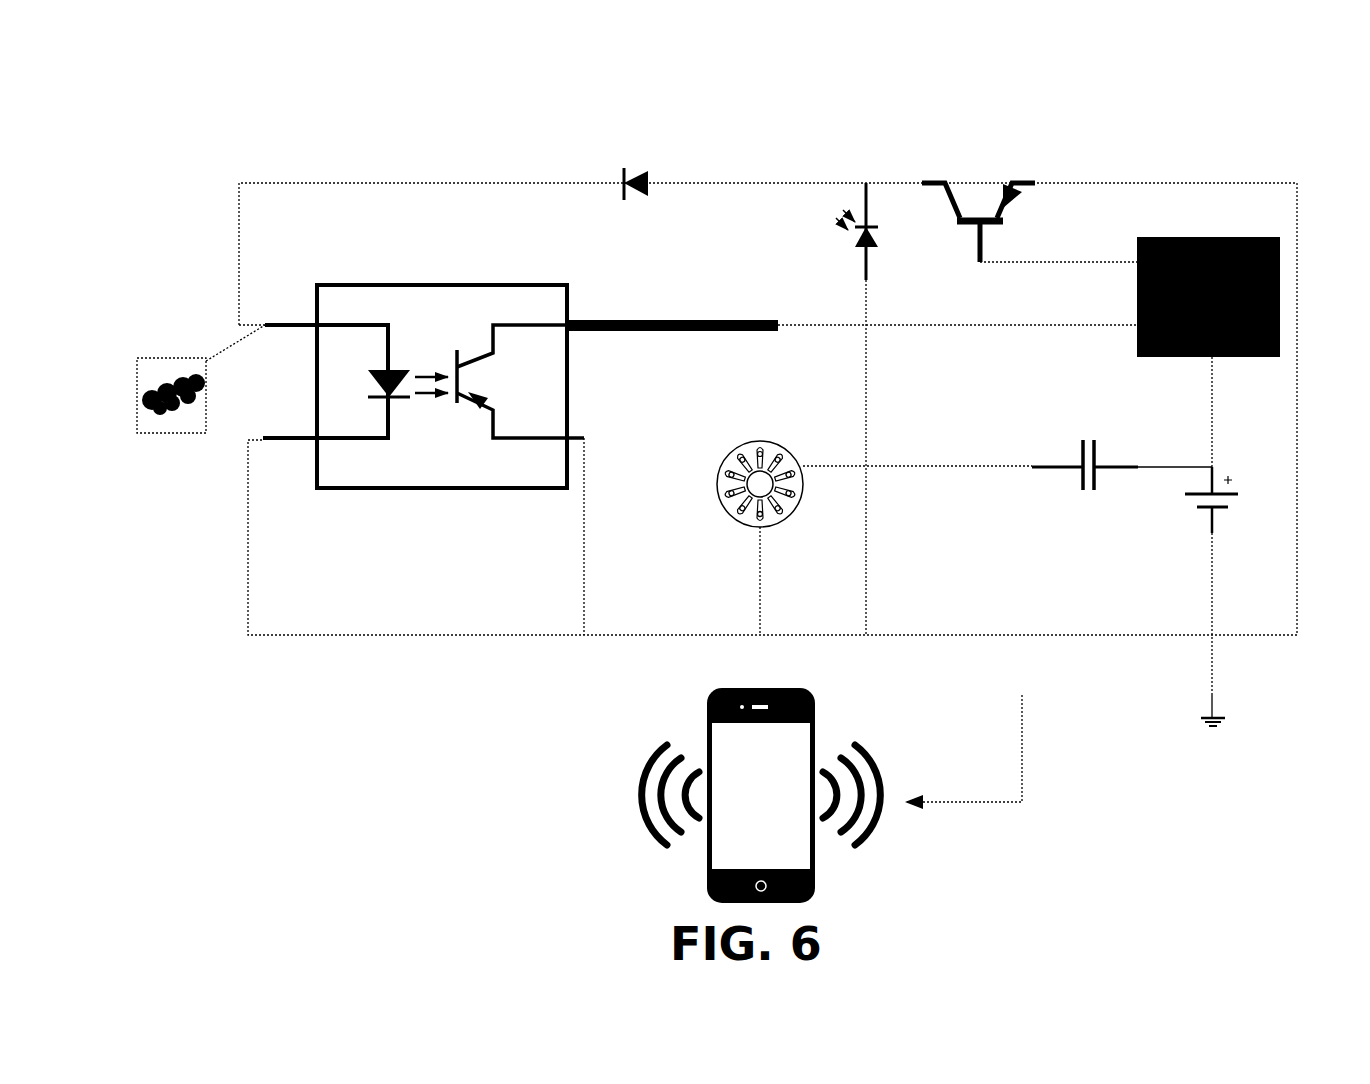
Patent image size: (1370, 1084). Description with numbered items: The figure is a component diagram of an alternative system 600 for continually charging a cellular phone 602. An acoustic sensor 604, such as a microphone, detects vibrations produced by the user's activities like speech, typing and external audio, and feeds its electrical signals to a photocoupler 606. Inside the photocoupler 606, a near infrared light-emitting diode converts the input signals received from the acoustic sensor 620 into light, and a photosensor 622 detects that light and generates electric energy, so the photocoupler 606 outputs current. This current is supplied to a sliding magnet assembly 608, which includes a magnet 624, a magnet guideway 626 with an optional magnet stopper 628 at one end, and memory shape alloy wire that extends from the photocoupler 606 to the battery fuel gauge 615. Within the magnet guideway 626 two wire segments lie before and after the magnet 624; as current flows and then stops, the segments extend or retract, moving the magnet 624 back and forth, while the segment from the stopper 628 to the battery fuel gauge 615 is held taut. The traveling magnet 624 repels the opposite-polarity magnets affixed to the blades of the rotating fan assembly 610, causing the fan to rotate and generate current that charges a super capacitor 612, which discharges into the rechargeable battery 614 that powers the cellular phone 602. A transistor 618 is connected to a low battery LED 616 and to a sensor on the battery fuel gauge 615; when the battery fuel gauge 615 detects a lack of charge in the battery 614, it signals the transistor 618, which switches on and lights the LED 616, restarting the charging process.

The system 600 is at (235, 78).
The cellular phone 602 is at (647, 722).
The acoustic sensor 604 is at (156, 352).
The photocoupler 606 is at (401, 472).
The sliding magnet assembly 608 is at (768, 355).
The rotating fan assembly 610 is at (733, 435).
The super capacitor 612 is at (1077, 438).
The rechargeable battery 614 is at (1242, 487).
The battery fuel gauge 615 is at (1155, 237).
The low battery LED 616 is at (826, 210).
The transistor 618 is at (970, 185).
The acoustic sensor 620 is at (355, 385).
The photosensor 622 is at (507, 332).
The magnet 624 is at (645, 320).
The magnet guideway 626 is at (720, 320).
The magnet stopper 628 is at (780, 322).